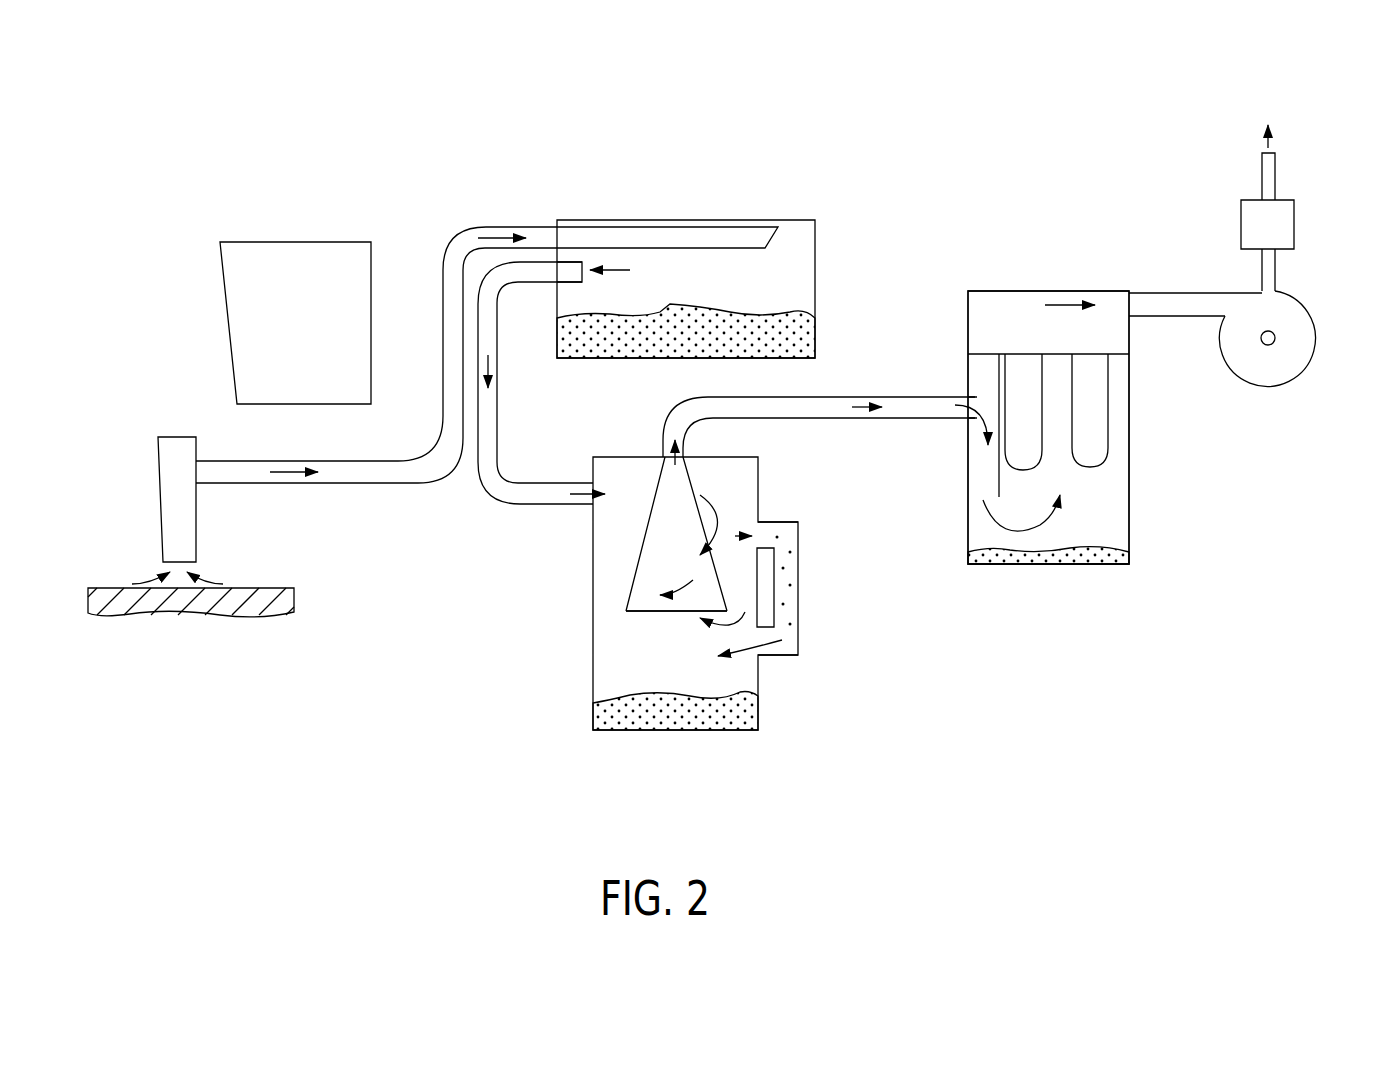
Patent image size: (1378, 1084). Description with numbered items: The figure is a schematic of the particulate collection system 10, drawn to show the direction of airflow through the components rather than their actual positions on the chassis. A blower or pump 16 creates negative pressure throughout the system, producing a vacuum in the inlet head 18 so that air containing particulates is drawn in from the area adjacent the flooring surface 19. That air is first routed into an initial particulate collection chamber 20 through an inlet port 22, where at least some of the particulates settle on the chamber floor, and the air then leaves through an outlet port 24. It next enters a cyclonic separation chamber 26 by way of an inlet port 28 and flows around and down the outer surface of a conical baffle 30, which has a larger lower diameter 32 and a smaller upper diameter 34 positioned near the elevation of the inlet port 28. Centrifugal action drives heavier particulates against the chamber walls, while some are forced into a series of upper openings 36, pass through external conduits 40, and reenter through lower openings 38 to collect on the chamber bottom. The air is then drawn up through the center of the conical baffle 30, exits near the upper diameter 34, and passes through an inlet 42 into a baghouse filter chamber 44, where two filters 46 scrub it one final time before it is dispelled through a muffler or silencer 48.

The particulate collection system 10 is at (228, 157).
The blower or pump 16 is at (1318, 345).
The inlet head 18 is at (160, 493).
The flooring surface 19 is at (262, 590).
The initial particulate collection chamber 20 is at (660, 220).
The inlet port 22 is at (745, 235).
The outlet port 24 is at (562, 275).
The cyclonic separation chamber 26 is at (592, 607).
The inlet port 28 is at (587, 512).
The conical baffle 30 is at (680, 540).
The lower diameter 32 is at (612, 618).
The upper diameter 34 is at (708, 450).
The upper openings 36 is at (771, 514).
The lower openings 38 is at (770, 667).
The conduits 40 is at (798, 585).
The inlet 42 is at (957, 383).
The baghouse filter chamber 44 is at (1030, 291).
The filter 46 is at (1015, 470).
The muffler or silencer 48 is at (1297, 225).